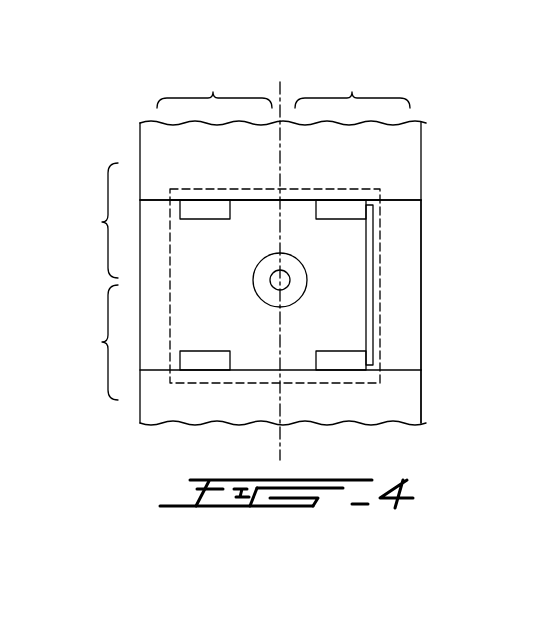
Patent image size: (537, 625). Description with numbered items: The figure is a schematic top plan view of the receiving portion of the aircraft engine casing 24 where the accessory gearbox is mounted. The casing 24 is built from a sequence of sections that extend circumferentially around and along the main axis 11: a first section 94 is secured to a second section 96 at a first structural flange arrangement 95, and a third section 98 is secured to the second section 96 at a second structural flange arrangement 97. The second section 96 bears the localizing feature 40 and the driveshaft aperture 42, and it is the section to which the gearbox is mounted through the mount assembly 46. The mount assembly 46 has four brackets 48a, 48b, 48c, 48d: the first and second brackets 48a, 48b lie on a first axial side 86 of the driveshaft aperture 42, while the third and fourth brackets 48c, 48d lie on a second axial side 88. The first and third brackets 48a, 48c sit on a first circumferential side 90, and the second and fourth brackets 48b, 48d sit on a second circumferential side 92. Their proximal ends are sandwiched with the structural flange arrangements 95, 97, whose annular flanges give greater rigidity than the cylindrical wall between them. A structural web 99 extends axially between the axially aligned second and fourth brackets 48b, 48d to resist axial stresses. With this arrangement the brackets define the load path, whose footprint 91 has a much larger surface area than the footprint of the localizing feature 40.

The main axis 11 is at (282, 100).
The casing 24 is at (408, 162).
The localizing feature 40 is at (256, 264).
The driveshaft aperture 42 is at (270, 280).
The mount assembly 46 is at (362, 200).
The first bracket 48a is at (204, 362).
The second bracket 48b is at (335, 362).
The third bracket 48c is at (204, 208).
The fourth bracket 48d is at (335, 208).
The first axial side 86 is at (92, 342).
The second axial side 88 is at (92, 220).
The first circumferential side 90 is at (214, 86).
The footprint 91 is at (244, 189).
The second circumferential side 92 is at (352, 86).
The first section 94 is at (400, 397).
The first structural flange arrangement 95 is at (395, 370).
The second section 96 is at (405, 320).
The second structural flange arrangement 97 is at (395, 200).
The third section 98 is at (405, 188).
The structural web 99 is at (373, 284).